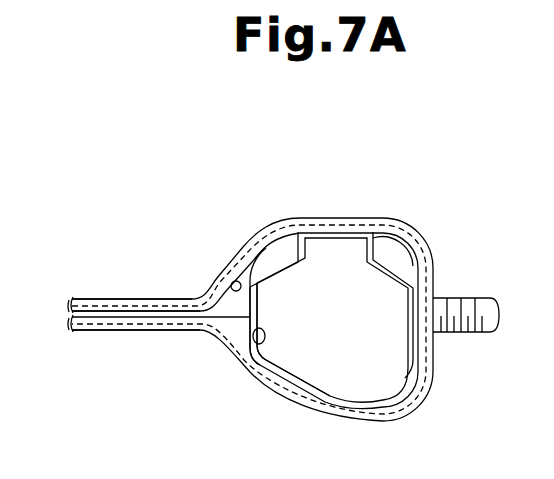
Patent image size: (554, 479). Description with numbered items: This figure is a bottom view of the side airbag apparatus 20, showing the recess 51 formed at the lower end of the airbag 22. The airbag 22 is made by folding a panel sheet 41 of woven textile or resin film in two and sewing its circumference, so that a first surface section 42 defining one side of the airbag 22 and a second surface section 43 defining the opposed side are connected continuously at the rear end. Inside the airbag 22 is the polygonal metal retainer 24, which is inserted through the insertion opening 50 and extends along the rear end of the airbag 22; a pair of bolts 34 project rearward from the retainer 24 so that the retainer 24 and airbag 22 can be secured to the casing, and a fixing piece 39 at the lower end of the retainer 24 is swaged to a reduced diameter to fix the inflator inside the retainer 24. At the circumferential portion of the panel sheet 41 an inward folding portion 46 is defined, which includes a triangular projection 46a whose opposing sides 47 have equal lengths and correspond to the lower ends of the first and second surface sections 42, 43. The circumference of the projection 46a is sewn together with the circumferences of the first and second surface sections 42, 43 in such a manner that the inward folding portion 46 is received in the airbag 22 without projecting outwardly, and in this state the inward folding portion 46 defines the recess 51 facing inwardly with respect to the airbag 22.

The side airbag apparatus 20 is at (459, 194).
The airbag 22 is at (399, 401).
The retainer 24 is at (391, 270).
The bolts 34 is at (489, 311).
The fixing piece 39 is at (343, 237).
The panel sheet 41 is at (434, 267).
The first surface section 42 is at (121, 297).
The second surface section 43 is at (121, 333).
The inward folding portion 46 is at (238, 325).
The projection 46a is at (250, 362).
The sides of the projection 47 is at (69, 334).
The insertion opening 50 is at (237, 360).
The recess 51 is at (234, 281).